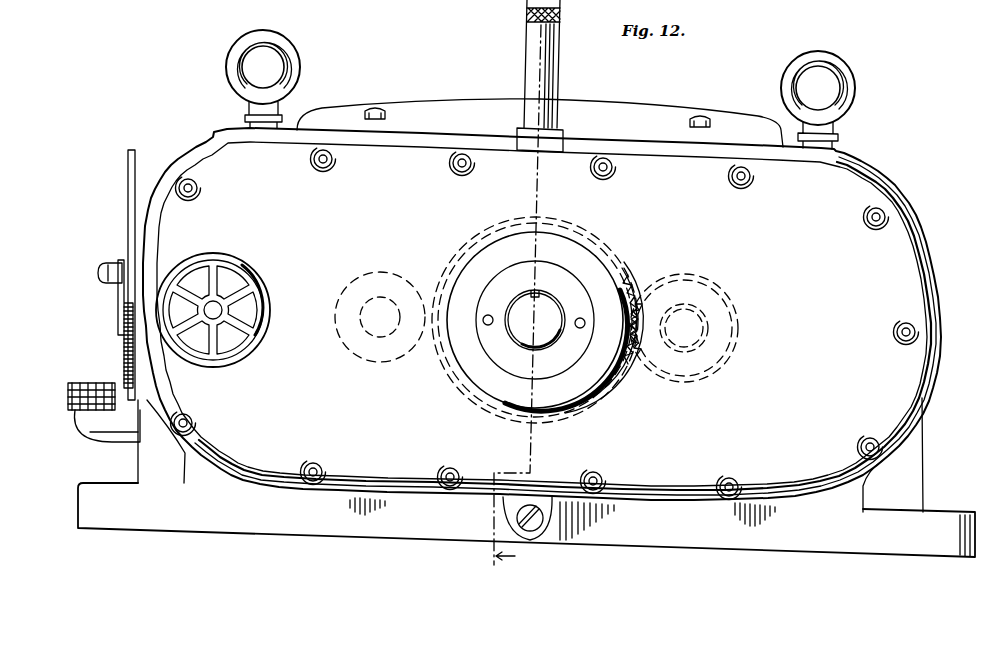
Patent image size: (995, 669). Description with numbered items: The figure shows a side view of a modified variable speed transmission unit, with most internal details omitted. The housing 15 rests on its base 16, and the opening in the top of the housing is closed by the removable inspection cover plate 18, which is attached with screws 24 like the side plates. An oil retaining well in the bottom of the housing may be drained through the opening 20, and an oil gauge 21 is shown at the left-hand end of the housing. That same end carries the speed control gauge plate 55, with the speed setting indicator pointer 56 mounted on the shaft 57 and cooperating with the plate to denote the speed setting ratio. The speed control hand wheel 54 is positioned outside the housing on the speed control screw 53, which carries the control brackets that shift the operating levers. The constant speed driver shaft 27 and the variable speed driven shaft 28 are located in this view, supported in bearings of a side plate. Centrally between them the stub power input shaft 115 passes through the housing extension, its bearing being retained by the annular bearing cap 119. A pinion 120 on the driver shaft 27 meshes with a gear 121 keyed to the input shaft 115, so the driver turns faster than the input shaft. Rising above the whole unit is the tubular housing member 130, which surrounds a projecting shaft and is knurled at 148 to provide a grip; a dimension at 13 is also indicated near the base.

The dimension offset 13 is at (490, 561).
The housing 15 is at (938, 372).
The base 16 is at (806, 552).
The removable inspection cover plate 18 is at (606, 100).
The opening 20 is at (516, 514).
The oil gauge 21 is at (86, 436).
The screws 24 is at (311, 160).
The constant speed driver shaft 27 is at (686, 328).
The variable speed driven shaft 28 is at (372, 302).
The speed control screw 53 is at (217, 318).
The speed control hand wheel 54 is at (221, 253).
The speed control gauge plate 55 is at (128, 186).
The speed setting indicator pointer 56 is at (118, 312).
The shaft 57 is at (102, 272).
The stub power input shaft 115 is at (532, 345).
The annular bearing cap 119 is at (488, 325).
The pinion 120 is at (706, 288).
The gear 121 is at (604, 258).
The housing member 130 is at (562, 66).
The knurled portion 148 is at (527, 28).